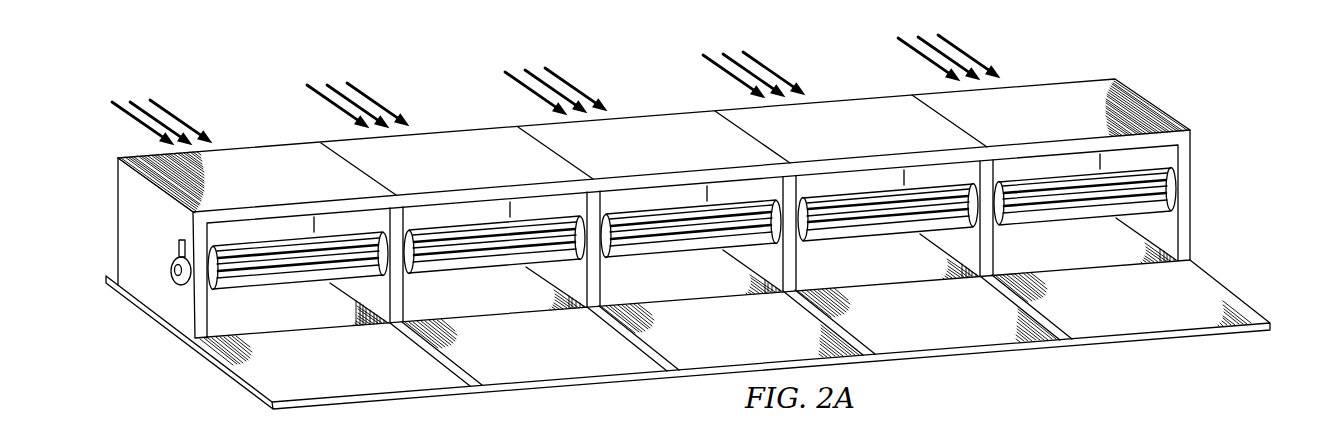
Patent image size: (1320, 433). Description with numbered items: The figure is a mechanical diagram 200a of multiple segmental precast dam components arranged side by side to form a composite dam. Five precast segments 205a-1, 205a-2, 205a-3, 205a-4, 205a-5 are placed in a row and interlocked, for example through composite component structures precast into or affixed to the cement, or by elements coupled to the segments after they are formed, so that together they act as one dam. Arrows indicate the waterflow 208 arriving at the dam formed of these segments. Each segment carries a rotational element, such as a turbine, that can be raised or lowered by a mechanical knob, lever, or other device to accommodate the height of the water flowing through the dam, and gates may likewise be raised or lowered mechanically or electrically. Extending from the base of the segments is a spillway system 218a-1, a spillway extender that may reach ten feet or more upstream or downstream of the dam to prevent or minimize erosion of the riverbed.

The mechanical diagram 200a is at (1191, 105).
The precast segment 205a-1 is at (274, 157).
The precast segment 205a-2 is at (471, 140).
The precast segment 205a-3 is at (668, 125).
The precast segment 205a-4 is at (864, 107).
The precast segment 205a-5 is at (1068, 90).
The waterflow 208 is at (371, 98).
The spillway system 218a-1 is at (1188, 300).